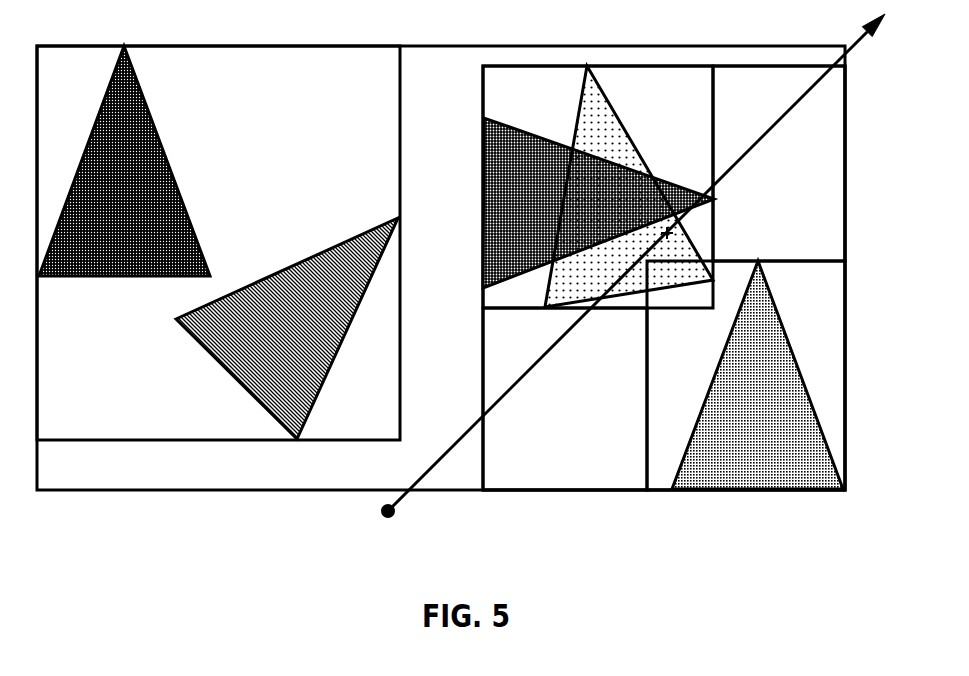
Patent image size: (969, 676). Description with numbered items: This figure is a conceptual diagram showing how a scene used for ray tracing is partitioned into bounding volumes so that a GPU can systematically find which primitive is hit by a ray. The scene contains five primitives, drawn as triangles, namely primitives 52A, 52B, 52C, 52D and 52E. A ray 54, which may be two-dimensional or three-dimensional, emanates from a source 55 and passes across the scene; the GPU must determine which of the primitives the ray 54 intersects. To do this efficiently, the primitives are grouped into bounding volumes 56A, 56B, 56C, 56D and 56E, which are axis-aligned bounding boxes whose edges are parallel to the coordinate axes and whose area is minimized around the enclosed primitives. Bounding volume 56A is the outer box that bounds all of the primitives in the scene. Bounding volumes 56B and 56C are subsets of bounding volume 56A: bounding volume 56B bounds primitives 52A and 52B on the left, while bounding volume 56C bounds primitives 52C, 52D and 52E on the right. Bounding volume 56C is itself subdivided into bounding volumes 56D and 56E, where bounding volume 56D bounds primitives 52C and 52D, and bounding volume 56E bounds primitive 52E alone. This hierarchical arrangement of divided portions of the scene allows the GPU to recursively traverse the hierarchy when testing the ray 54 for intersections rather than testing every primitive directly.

The primitive 52A is at (135, 70).
The primitive 52B is at (318, 400).
The primitive 52C is at (484, 117).
The primitive 52D is at (612, 112).
The primitive 52E is at (770, 285).
The ray 54 is at (512, 392).
The source 55 is at (394, 517).
The bounding volume 56A is at (421, 46).
The bounding volume 56B is at (400, 121).
The bounding volume 56C is at (739, 66).
The bounding volume 56D is at (713, 110).
The bounding volume 56E is at (758, 262).